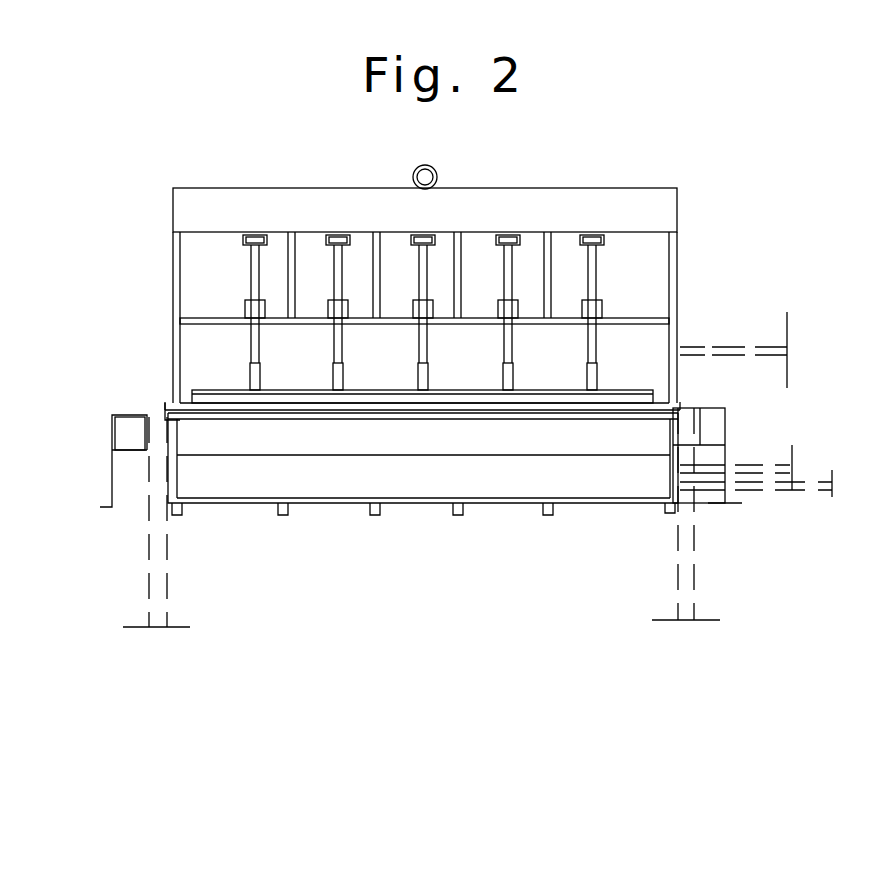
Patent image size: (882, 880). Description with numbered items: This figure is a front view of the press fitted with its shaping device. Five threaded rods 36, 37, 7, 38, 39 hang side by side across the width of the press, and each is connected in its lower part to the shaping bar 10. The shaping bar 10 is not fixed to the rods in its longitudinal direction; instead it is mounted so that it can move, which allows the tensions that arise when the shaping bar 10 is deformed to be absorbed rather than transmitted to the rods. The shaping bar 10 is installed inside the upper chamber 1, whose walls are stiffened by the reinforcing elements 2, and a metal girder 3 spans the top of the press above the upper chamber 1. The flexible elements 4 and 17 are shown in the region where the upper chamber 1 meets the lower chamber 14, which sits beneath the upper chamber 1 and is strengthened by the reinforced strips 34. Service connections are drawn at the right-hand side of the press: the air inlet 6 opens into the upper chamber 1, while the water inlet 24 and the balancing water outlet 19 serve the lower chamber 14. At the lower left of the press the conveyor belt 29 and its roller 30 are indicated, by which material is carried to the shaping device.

The upper chamber 1 is at (628, 342).
The reinforcing elements 2 is at (178, 268).
The metal girder 3 is at (570, 213).
The flexible element 4 is at (660, 402).
The air inlet 6 is at (760, 358).
The threaded rod 7 is at (430, 243).
The shaping bar 10 is at (212, 388).
The lower chamber 14 is at (233, 483).
The flexible element 17 is at (380, 418).
The balancing water outlet 19 is at (800, 490).
The water inlet 24 is at (763, 467).
The conveyor belt 29 is at (165, 405).
The roller 30 is at (133, 437).
The reinforced strips 34 is at (302, 413).
The threaded rod 36 is at (253, 285).
The threaded rod 37 is at (338, 285).
The threaded rod 38 is at (508, 238).
The threaded rod 39 is at (597, 257).